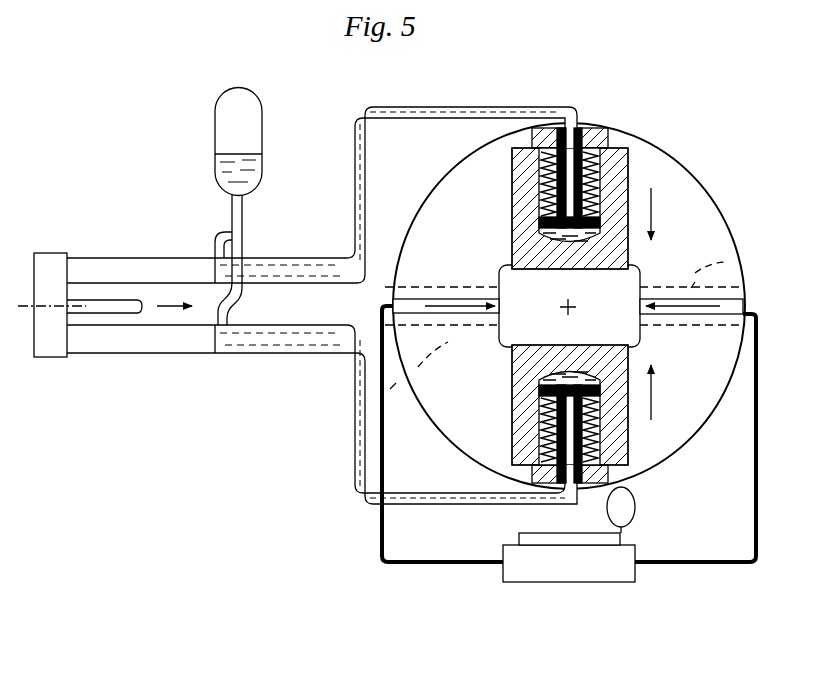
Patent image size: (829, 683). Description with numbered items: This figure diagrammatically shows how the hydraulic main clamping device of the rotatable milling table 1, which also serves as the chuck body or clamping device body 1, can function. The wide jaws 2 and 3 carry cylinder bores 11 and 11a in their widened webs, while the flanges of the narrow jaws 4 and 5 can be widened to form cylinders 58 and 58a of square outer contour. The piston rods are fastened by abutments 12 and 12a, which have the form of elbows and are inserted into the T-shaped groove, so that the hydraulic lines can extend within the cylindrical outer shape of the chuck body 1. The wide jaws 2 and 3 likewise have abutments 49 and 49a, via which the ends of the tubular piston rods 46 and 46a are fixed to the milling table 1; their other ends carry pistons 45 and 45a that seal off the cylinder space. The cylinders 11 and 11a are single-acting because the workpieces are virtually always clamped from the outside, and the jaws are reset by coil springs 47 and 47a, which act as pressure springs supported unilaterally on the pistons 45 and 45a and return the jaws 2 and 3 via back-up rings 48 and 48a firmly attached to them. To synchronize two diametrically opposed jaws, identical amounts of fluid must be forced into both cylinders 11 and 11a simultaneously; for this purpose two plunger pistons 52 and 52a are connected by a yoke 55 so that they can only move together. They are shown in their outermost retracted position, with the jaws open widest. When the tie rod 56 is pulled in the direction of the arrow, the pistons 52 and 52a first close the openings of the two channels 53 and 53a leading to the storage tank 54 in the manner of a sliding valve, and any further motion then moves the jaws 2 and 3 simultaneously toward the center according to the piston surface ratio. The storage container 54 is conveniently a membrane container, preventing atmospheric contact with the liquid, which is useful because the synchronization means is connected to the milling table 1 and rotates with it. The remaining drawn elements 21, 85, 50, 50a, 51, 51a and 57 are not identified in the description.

The rotatable milling table 1 is at (712, 230).
The wide jaw 2 is at (623, 163).
The wide jaw 3 is at (640, 462).
The narrow jaw 4 is at (405, 304).
The narrow jaw 5 is at (712, 305).
The cylinder bore 11 is at (520, 390).
The cylinder bore 11a is at (625, 150).
The abutment 12 is at (394, 290).
The abutment 12a is at (745, 318).
The hub 21 is at (627, 332).
The rotation axis 85 is at (572, 312).
The piston 45 is at (620, 462).
The piston 45a is at (540, 222).
The piston rod 46 is at (530, 425).
The piston rod 46a is at (620, 175).
The coil spring 47 is at (560, 410).
The coil spring 47a is at (512, 155).
The back-up ring 48 is at (608, 470).
The back-up ring 48a is at (553, 145).
The abutment 49 is at (600, 483).
The abutment 49a is at (600, 130).
The lower hydraulic line 50 is at (356, 468).
The upper hydraulic line 50a is at (372, 108).
The lower fluid passage 51 is at (280, 347).
The upper fluid passage 51a is at (322, 262).
The plunger piston 52 is at (143, 340).
The plunger piston 52a is at (142, 273).
The channel 53 is at (240, 250).
The channel 53a is at (215, 240).
The storage tank 54 is at (255, 160).
The yoke 55 is at (46, 347).
The tie rod 56 is at (102, 305).
The drive unit 57 is at (608, 565).
The cylinder 58 is at (407, 380).
The cylinder 58a is at (730, 270).